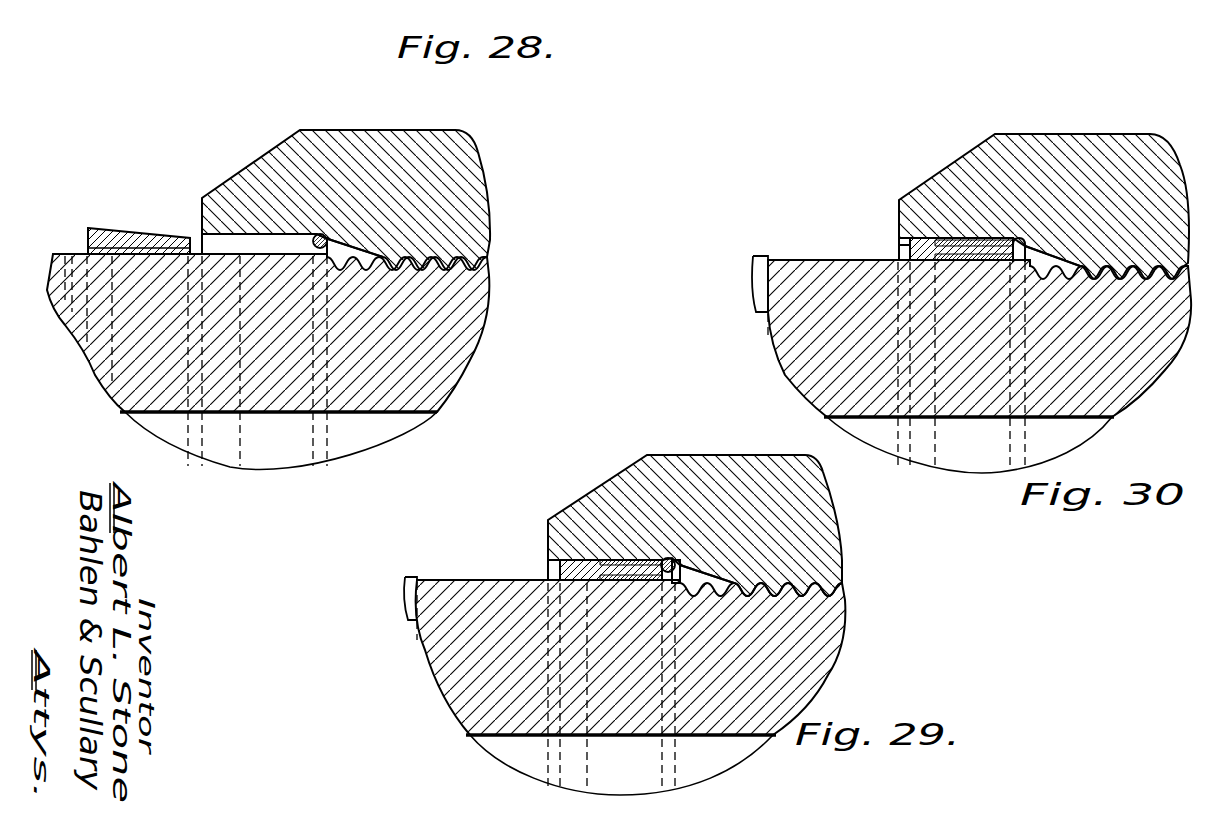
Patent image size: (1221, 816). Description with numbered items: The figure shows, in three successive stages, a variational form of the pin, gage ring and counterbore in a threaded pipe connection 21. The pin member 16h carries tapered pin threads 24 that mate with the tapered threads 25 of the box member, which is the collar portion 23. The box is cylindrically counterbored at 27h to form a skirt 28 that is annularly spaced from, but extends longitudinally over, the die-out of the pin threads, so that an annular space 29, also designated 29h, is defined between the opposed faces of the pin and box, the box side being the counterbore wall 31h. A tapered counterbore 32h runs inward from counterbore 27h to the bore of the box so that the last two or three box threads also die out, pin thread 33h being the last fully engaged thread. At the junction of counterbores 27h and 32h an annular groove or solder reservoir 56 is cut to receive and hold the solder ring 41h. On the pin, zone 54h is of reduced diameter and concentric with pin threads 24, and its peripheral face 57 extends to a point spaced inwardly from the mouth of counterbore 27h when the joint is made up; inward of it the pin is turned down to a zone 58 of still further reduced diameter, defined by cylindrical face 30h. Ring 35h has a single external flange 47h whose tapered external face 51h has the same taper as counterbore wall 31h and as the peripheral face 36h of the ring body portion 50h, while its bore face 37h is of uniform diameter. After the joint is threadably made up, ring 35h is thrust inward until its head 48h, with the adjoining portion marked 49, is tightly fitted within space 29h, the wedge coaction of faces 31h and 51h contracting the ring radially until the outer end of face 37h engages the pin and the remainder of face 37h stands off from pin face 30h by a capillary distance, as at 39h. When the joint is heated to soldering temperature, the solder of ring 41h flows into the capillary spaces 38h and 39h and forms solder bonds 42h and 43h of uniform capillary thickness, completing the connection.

In FIG. 28, the body 16h is at (375, 392).
In FIG. 30, the body 16h is at (1078, 392).
In FIG. 29, the body 16h is at (624, 686).
In FIG. 28, the connection 21 is at (457, 247).
In FIG. 30, the connection 21 is at (1128, 250).
In FIG. 29, the connection 21 is at (773, 578).
In FIG. 28, the collar portion 23 is at (452, 157).
In FIG. 30, the collar portion 23 is at (1162, 205).
In FIG. 29, the collar portion 23 is at (822, 538).
In FIG. 30, the pin threads 24 is at (1165, 300).
In FIG. 29, the pin threads 24 is at (840, 605).
In FIG. 30, the box threads 25 is at (1175, 265).
In FIG. 29, the box threads 25 is at (818, 585).
In FIG. 28, the counterbore 27h is at (266, 246).
In FIG. 28, the skirt 28 is at (233, 190).
In FIG. 30, the skirt 28 is at (977, 160).
In FIG. 29, the skirt 28 is at (620, 490).
In FIG. 29, the space 29 is at (548, 562).
In FIG. 28, the space 29h is at (236, 246).
In FIG. 28, the cylindrical face 30h is at (291, 250).
In FIG. 29, the cylindrical face 30h is at (680, 583).
In FIG. 28, the counterbore wall 31h is at (293, 246).
In FIG. 28, the tapered counterbore 32h is at (405, 260).
In FIG. 30, the tapered counterbore 32h is at (1060, 268).
In FIG. 29, the tapered counterbore 32h is at (740, 585).
In FIG. 28, the threads 33h is at (452, 268).
In FIG. 30, the threads 33h is at (1168, 305).
In FIG. 29, the threads 33h is at (800, 592).
In FIG. 28, the ring 35h is at (143, 258).
In FIG. 30, the ring 35h is at (950, 237).
In FIG. 29, the ring 35h is at (600, 572).
In FIG. 28, the peripheral face 36h is at (155, 235).
In FIG. 28, the ring face 37h is at (157, 258).
In FIG. 29, the capillary space 38h is at (637, 567).
In FIG. 29, the capillary space 39h is at (612, 583).
In FIG. 28, the solder ring 41h is at (323, 236).
In FIG. 29, the solder ring 41h is at (670, 560).
In FIG. 30, the solder bond 42h is at (985, 238).
In FIG. 30, the solder bond 43h is at (975, 290).
In FIG. 28, the external flange 47h is at (100, 228).
In FIG. 30, the external flange 47h is at (912, 245).
In FIG. 28, the head 48h is at (88, 243).
In FIG. 30, the head 48h is at (898, 256).
In FIG. 29, the head 48h is at (567, 568).
In FIG. 28, the ring 49 is at (140, 232).
In FIG. 28, the body portion 50h is at (170, 240).
In FIG. 29, the body portion 50h is at (663, 565).
In FIG. 28, the external face 51h is at (115, 230).
In FIG. 28, the zone 54h is at (67, 325).
In FIG. 30, the zone 54h is at (833, 270).
In FIG. 29, the zone 54h is at (467, 590).
In FIG. 28, the solder reservoir 56 is at (378, 252).
In FIG. 30, the solder reservoir 56 is at (1025, 250).
In FIG. 29, the solder reservoir 56 is at (690, 580).
In FIG. 28, the peripheral face 57 is at (202, 246).
In FIG. 29, the peripheral face 57 is at (505, 578).
In FIG. 28, the zone 58 is at (258, 262).